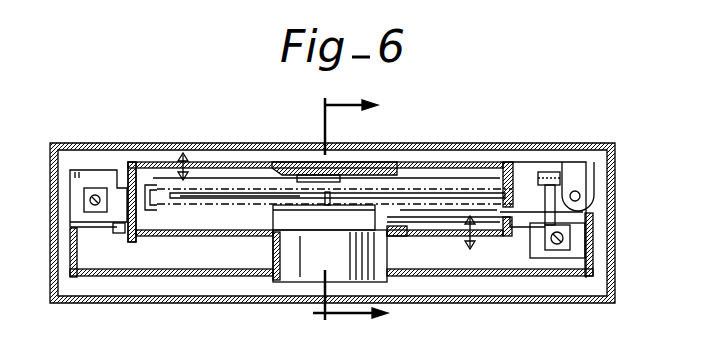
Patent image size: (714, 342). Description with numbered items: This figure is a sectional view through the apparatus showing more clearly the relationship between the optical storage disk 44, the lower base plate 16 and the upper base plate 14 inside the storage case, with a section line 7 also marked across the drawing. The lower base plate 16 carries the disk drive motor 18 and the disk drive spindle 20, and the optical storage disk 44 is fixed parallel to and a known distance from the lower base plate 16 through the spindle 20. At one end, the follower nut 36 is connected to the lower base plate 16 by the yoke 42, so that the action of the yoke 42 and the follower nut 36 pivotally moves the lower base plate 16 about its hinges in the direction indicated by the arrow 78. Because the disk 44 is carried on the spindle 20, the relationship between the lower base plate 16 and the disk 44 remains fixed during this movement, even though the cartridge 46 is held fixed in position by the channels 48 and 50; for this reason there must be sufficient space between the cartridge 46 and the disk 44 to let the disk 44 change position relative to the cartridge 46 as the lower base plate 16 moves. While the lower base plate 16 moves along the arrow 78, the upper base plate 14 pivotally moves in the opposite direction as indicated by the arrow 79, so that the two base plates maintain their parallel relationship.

The section line 7- 7 is at (360, 212).
The upper base plate 14 is at (462, 163).
The lower base plate 16 is at (170, 233).
The disk drive motor 18 is at (338, 268).
The disk drive spindle 20 is at (324, 196).
The follower nut 36 is at (572, 238).
The yoke 42 is at (565, 213).
The optical storage disk 44 is at (250, 198).
The cartridge 46 is at (213, 206).
The channel 48 is at (134, 163).
The channel 50 is at (531, 165).
The arrow 78 is at (470, 248).
The arrow 79 is at (185, 157).